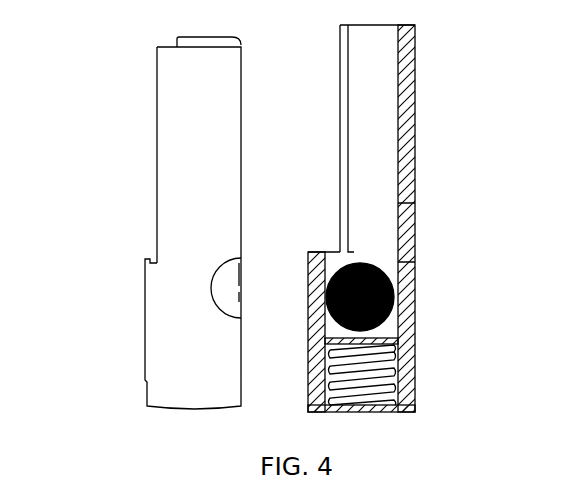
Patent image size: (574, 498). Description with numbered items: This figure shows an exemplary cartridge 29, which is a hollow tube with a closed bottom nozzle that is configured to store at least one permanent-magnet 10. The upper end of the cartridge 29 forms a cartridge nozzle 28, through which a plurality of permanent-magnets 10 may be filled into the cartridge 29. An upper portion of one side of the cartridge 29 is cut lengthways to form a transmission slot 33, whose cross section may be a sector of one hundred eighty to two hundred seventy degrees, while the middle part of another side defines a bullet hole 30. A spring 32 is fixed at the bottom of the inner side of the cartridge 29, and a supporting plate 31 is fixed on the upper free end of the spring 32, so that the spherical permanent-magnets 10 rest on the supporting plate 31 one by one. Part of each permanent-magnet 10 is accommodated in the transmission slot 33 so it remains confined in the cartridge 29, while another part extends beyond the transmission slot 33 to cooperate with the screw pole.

The permanent-magnet 10 is at (393, 283).
The cartridge nozzle 28 is at (370, 38).
The cartridge 29 is at (87, 266).
The bullet hole 30 is at (415, 228).
The supporting plate 31 is at (398, 332).
The spring 32 is at (398, 377).
The transmission slot 33 is at (158, 175).